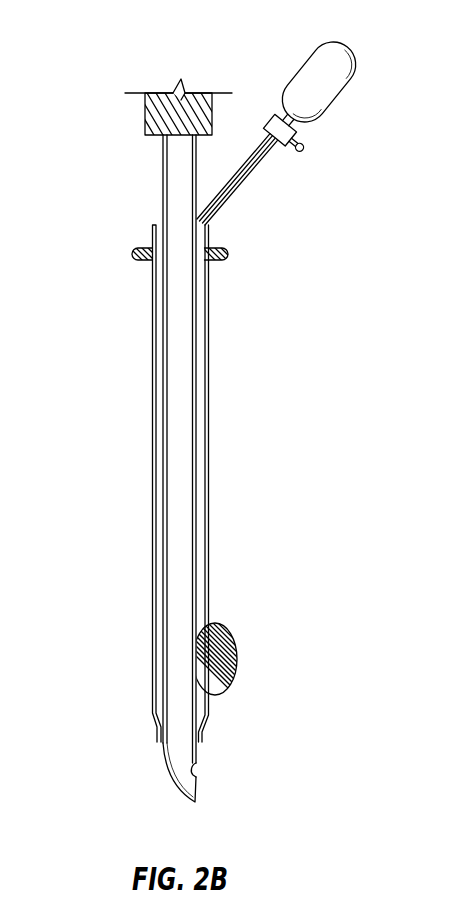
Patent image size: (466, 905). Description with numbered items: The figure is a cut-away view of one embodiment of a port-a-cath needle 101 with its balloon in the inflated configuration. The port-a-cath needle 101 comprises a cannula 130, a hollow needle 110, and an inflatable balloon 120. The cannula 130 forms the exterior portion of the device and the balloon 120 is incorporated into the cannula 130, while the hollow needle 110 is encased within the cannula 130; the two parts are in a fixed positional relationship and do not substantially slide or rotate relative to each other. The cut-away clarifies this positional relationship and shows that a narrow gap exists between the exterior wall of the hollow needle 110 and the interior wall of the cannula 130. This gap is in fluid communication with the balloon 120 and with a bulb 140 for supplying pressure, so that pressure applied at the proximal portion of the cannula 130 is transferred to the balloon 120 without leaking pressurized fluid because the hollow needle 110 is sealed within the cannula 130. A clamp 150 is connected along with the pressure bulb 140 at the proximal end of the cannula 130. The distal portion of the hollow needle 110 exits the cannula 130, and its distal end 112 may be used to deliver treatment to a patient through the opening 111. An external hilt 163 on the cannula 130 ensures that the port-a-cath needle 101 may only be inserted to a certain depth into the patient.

The port-a-cath needle 101 is at (121, 47).
The hollow needle 110 is at (178, 418).
The opening 111 is at (192, 772).
The distal end 112 is at (163, 745).
The inflatable balloon 120 is at (235, 662).
The cannula 130 is at (152, 330).
The bulb 140 is at (340, 92).
The clamp 150 is at (308, 163).
The external hilt 163 is at (228, 255).